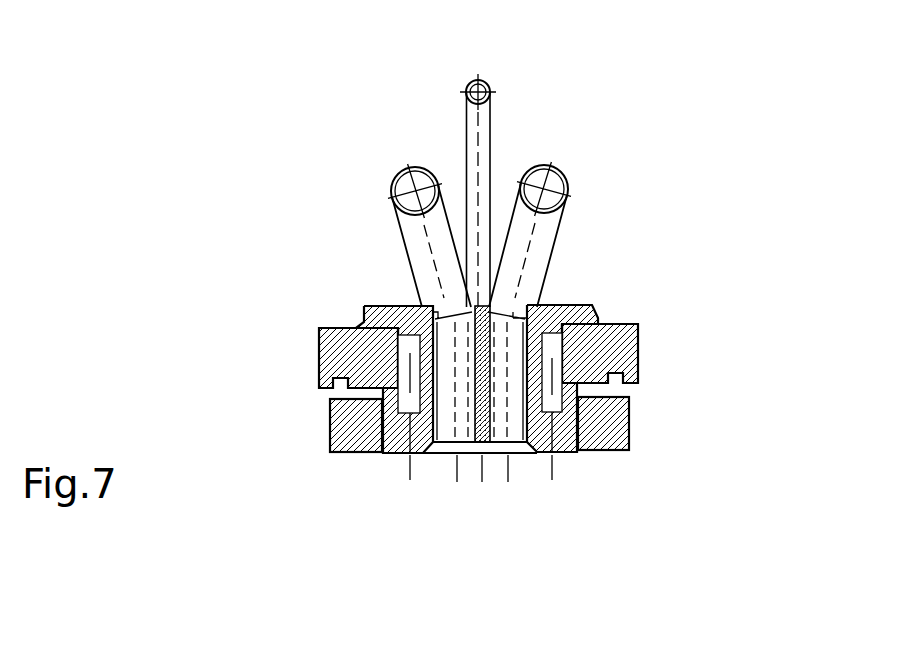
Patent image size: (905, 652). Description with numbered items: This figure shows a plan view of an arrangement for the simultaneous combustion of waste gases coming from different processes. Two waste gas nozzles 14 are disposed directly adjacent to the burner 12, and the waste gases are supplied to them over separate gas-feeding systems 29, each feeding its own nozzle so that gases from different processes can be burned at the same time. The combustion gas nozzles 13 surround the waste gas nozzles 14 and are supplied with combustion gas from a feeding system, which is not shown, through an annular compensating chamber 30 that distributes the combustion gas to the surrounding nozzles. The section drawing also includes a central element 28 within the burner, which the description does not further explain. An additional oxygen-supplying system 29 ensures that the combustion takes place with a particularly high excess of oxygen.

The burner 12 is at (638, 324).
The combustion gas nozzles 13 is at (408, 453).
The waste gas nozzle 14 is at (505, 413).
The central tube 28 is at (480, 145).
The gas-feeding system 29 is at (413, 190).
The annular compensating chamber 30 is at (593, 305).